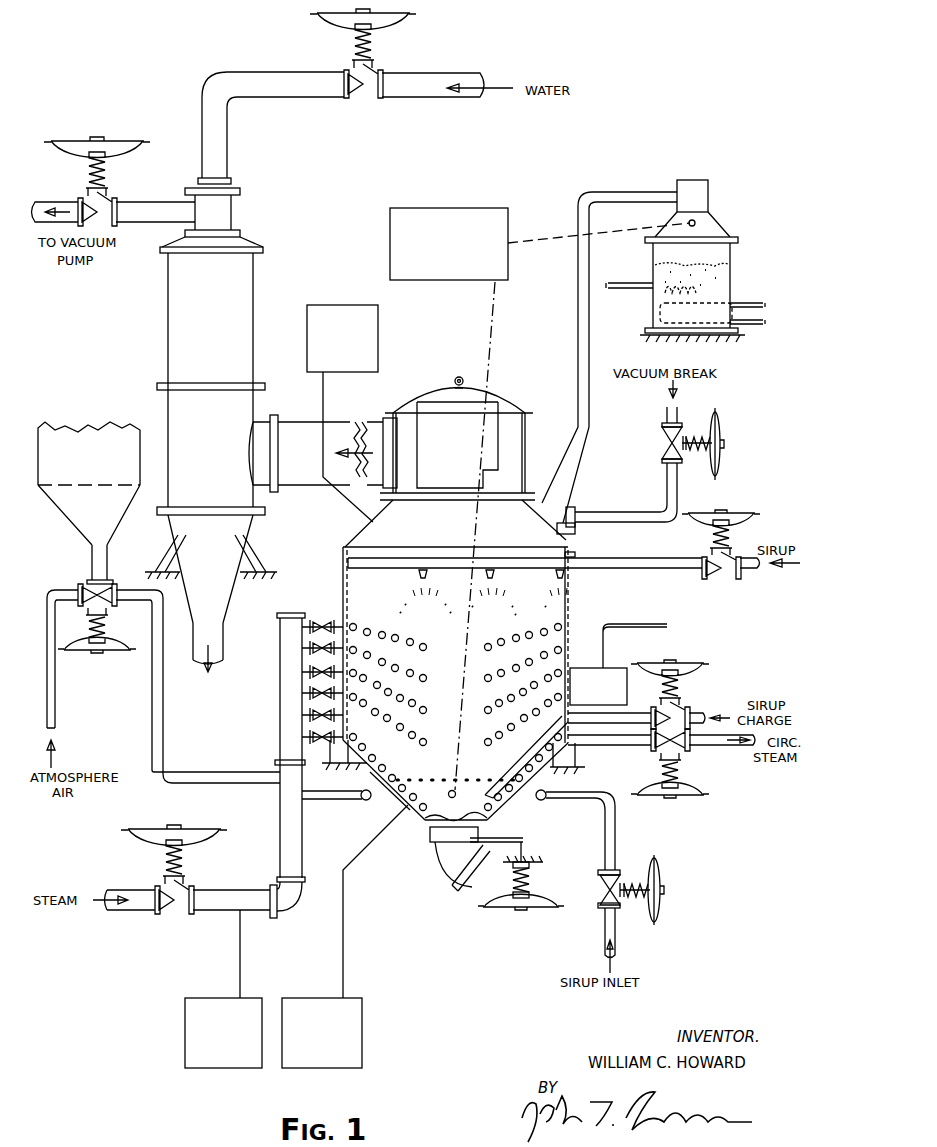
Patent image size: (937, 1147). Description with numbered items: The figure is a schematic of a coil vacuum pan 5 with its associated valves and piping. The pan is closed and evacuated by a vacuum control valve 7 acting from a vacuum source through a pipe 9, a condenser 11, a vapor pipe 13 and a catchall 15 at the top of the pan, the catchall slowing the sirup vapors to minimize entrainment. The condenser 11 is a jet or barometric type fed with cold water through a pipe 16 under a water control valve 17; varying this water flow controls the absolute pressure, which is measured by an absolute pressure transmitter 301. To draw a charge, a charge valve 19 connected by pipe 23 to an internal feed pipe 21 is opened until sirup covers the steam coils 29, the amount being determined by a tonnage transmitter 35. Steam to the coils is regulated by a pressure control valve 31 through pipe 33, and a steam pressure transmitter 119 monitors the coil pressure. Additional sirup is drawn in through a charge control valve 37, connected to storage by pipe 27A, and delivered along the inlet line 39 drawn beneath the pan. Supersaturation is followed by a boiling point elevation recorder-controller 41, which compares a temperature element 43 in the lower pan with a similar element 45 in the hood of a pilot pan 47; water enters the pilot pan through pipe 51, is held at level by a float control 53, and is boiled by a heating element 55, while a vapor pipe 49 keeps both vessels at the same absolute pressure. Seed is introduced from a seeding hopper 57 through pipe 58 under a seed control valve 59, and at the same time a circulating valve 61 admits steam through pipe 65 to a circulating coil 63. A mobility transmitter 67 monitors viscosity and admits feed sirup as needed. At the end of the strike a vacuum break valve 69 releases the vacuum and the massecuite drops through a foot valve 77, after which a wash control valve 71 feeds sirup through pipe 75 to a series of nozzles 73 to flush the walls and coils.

The vacuum pan 5 is at (573, 606).
The vacuum control valve 7 is at (107, 168).
The pipe 9 is at (160, 200).
The condenser 11 is at (168, 318).
The vapor pipe 13 is at (347, 422).
The catchall 15 is at (526, 430).
The pipe 16 is at (256, 70).
The water control valve 17 is at (392, 27).
The charge valve 19 is at (673, 665).
The internal feed pipe 21 is at (490, 765).
The pipe 23 is at (697, 712).
The pipe 27A is at (618, 945).
The steam coils 29 is at (462, 690).
The pressure control valve 31 is at (195, 828).
The pipe 33 is at (280, 690).
The tonnage transmitter 35 is at (362, 1024).
The charge control valve 37 is at (660, 905).
The sirup inlet pipe 39 is at (605, 832).
The recorder-controller 41 is at (407, 208).
The temperature element 43 is at (452, 790).
The temperature element 45 is at (697, 223).
The pilot pan 47 is at (653, 305).
The vapor pipe 49 is at (601, 190).
The pipe 51 is at (620, 285).
The float control 53 is at (722, 260).
The heating element 55 is at (748, 302).
The seeding hopper 57 is at (68, 425).
The pipe 58 is at (163, 730).
The seed control valve 59 is at (113, 650).
The circulating valve 61 is at (685, 795).
The circulating coil 63 is at (400, 770).
The pipe 65 is at (722, 750).
The mobility transmitter 67 is at (613, 668).
The vacuum break valve 69 is at (720, 425).
The wash control valve 71 is at (738, 515).
The nozzles 73 is at (486, 578).
The pipe 75 is at (633, 558).
The foot valve 77 is at (500, 913).
The steam pressure transmitter 119 is at (185, 1032).
The absolute pressure transmitter 301 is at (378, 335).